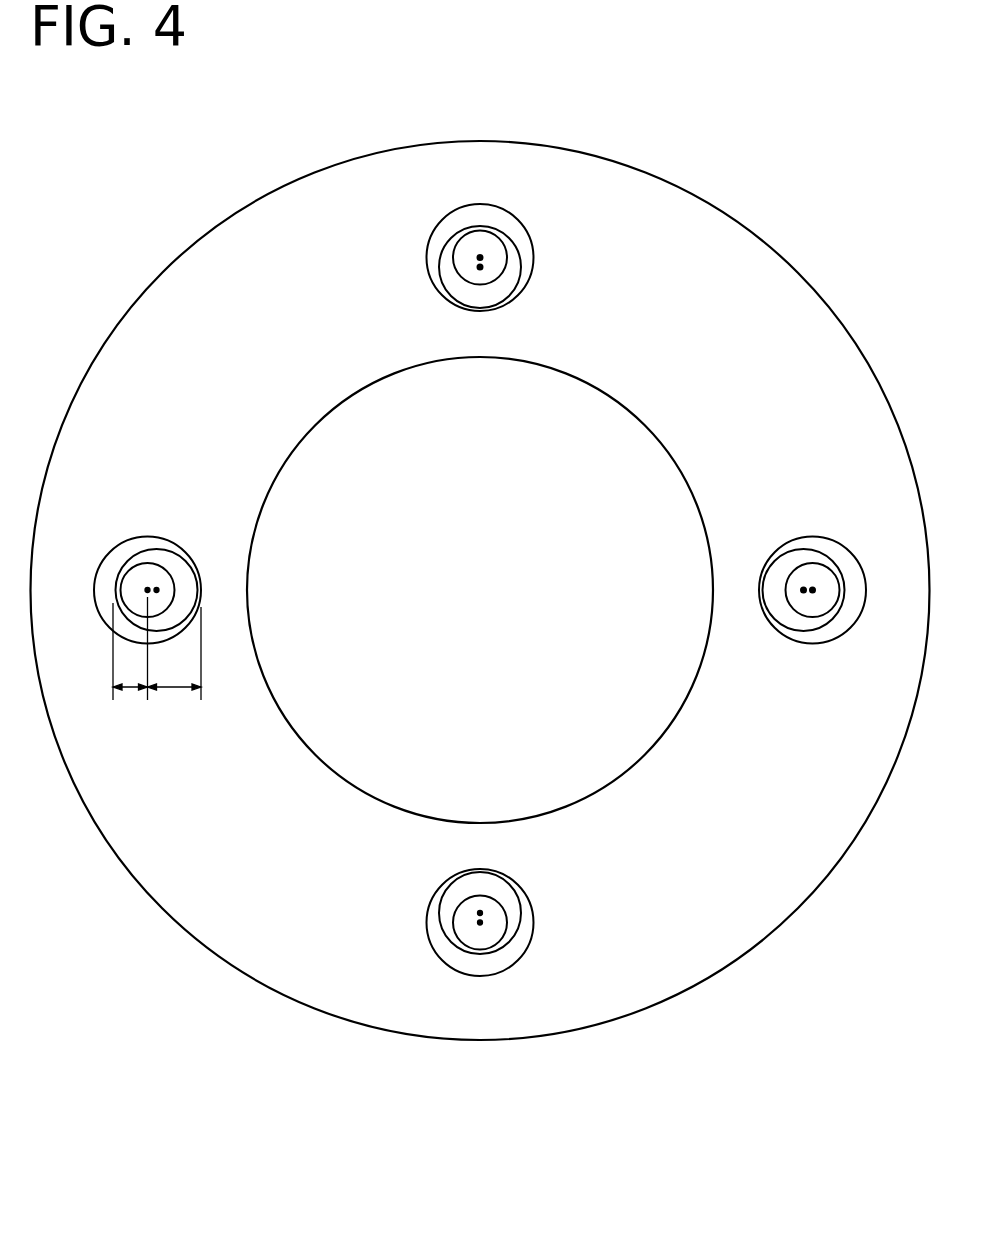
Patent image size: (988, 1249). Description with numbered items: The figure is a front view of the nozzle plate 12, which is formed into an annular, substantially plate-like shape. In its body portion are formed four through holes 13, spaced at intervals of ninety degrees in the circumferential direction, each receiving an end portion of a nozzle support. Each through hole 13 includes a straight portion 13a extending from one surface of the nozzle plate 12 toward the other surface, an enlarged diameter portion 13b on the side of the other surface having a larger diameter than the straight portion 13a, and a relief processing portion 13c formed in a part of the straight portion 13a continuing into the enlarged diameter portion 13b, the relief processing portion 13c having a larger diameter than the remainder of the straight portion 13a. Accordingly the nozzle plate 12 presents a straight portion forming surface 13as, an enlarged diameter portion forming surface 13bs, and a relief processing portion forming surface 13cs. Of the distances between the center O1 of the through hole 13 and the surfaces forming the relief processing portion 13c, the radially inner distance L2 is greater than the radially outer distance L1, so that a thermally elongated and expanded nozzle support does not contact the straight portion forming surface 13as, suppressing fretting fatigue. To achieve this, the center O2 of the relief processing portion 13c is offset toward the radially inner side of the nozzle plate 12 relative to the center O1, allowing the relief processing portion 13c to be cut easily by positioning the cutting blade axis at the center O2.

The nozzle plate 12 is at (796, 257).
The through hole 13 is at (614, 1004).
The straight portion 13a is at (495, 913).
The enlarged diameter portion 13b is at (519, 943).
The relief processing portion 13c is at (483, 953).
The straight portion forming surface 13as is at (171, 590).
The enlarged diameter portion forming surface 13bs is at (166, 633).
The relief processing portion forming surface 13cs is at (200, 591).
The center of the through hole O1 is at (365, 1067).
The center of the relief processing portion O2 is at (302, 1040).
The radially outer distance L1 is at (131, 669).
The radially inner distance L2 is at (175, 674).